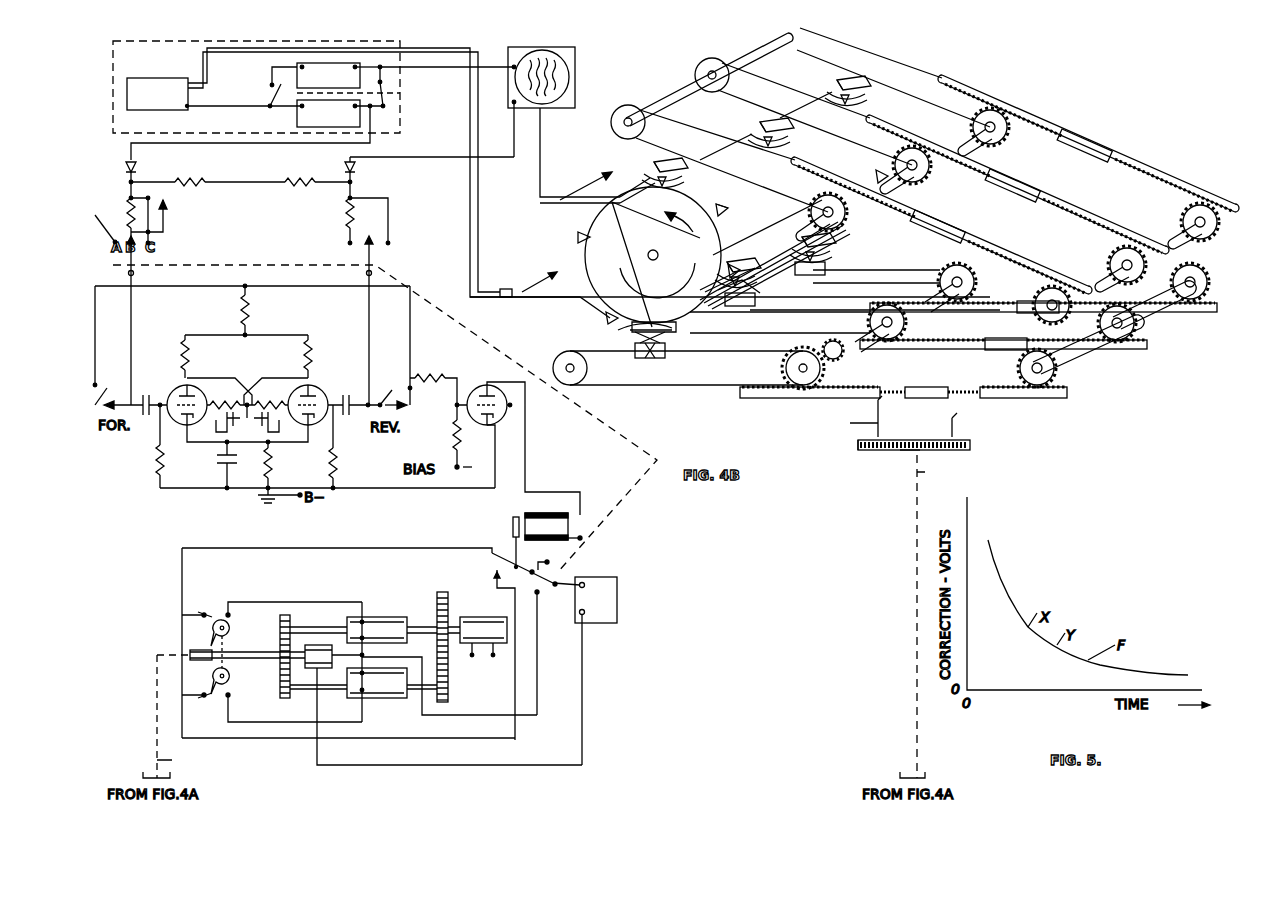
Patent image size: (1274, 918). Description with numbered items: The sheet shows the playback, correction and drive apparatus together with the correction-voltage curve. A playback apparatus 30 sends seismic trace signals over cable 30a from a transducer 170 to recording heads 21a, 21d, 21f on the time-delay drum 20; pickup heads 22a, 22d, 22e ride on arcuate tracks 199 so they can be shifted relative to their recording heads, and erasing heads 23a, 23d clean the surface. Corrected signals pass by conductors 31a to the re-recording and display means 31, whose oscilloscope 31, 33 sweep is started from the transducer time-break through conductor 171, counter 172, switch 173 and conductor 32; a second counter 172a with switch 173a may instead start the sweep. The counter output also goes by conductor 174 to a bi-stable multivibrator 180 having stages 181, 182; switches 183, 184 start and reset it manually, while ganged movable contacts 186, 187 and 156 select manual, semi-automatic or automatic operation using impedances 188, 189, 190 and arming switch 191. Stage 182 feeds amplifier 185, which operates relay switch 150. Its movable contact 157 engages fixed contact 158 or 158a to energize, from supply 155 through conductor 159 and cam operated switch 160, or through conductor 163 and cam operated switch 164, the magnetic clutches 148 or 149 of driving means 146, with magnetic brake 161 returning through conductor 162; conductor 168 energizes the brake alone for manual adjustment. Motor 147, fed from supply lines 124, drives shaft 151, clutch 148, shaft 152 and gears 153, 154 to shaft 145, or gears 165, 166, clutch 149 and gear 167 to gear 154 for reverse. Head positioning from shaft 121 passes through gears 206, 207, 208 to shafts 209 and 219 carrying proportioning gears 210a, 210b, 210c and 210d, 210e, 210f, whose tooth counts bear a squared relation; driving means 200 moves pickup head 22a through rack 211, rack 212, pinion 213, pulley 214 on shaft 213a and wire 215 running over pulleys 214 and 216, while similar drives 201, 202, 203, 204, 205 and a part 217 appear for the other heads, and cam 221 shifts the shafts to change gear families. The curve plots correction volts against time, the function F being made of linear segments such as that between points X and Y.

The playback apparatus 30 is at (400, 44).
The cable 30a is at (470, 244).
The re-recording and visual display control means 31 is at (575, 72).
The conductors 31a is at (537, 201).
The conductor 32 is at (468, 60).
The oscilloscope 33 is at (152, 528).
The transducer 170 is at (173, 103).
The conductor 171 is at (205, 106).
The counter 172 is at (297, 118).
The second counter 172a is at (330, 63).
The switch 173 is at (386, 104).
The switch 173a is at (270, 87).
The conductor 174 is at (262, 145).
The bi-stable multivibrator 180 is at (288, 325).
The stage 181 is at (172, 392).
The stage 182 is at (323, 392).
The switch 183 is at (109, 386).
The switch 184 is at (388, 394).
The amplifier 185 is at (495, 369).
The movable contact 186 is at (133, 273).
The movable contact 187 is at (366, 273).
The resistor 188 is at (100, 240).
The high resistance 189 is at (345, 216).
The high impedance 190 is at (127, 200).
The arming switch 191 is at (165, 212).
The supply lines 124 is at (483, 660).
The shaft 145 is at (172, 716).
The driving means 146 is at (373, 577).
The motor 147 is at (508, 628).
The magnetic clutch 148 is at (378, 617).
The magnetic clutch 149 is at (387, 698).
The relay control switch 150 is at (508, 523).
The shaft 151 is at (418, 627).
The shaft 152 is at (333, 627).
The gear 153 is at (283, 613).
The gear 154 is at (282, 647).
The source of supply 155 is at (612, 604).
The movable contact 156 is at (553, 589).
The relay actuated contact 157 is at (528, 569).
The fixed contact 158 is at (490, 555).
The fixed contact 158a is at (493, 580).
The conductor 159 is at (372, 548).
The cam operated switch 160 is at (207, 612).
The magnetic brake 161 is at (318, 645).
The conductor 162 is at (471, 766).
The conductor 163 is at (517, 741).
The cam operated switch 164 is at (207, 700).
The gear 165 is at (449, 604).
The gear 166 is at (449, 699).
The gear 167 is at (282, 690).
The conductor 168 is at (539, 717).
The drum 20 is at (788, 235).
The recording head 21a is at (600, 318).
The recording head 21d is at (725, 211).
The recording head 21f is at (880, 128).
The pickup head 22a is at (616, 330).
The pickup head 22d is at (683, 190).
The pickup head 22e is at (748, 140).
The cam 221 is at (825, 100).
The erasing head 23a is at (745, 275).
The erasing head 23d is at (577, 239).
The arcuate track 199 is at (667, 178).
The driving means 200 is at (745, 353).
The conveyor 201 is at (844, 311).
The conveyor 202 is at (907, 274).
The conveyor 203 is at (962, 219).
The conveyor 204 is at (1049, 177).
The conveyor 205 is at (1122, 137).
The gear 206 is at (910, 452).
The gear 207 is at (971, 447).
The gear 208 is at (858, 450).
The shaft 209 is at (960, 401).
The proportioning gear 210a is at (1056, 372).
The proportioning gear 210b is at (1136, 326).
The proportioning gear 210c is at (1204, 279).
The proportioning gear 210d is at (1036, 300).
The proportioning gear 210e is at (1115, 256).
The proportioning gear 210f is at (1219, 224).
The rack 211 is at (1054, 400).
The rack 212 is at (815, 399).
The pinion 213 is at (826, 372).
The shaft 213a is at (842, 353).
The pulley 214 is at (786, 370).
The wire 215 is at (684, 386).
The pulley 216 is at (588, 372).
The support 217 is at (636, 348).
The shaft 219 is at (1108, 250).
The shaft 121 is at (928, 616).